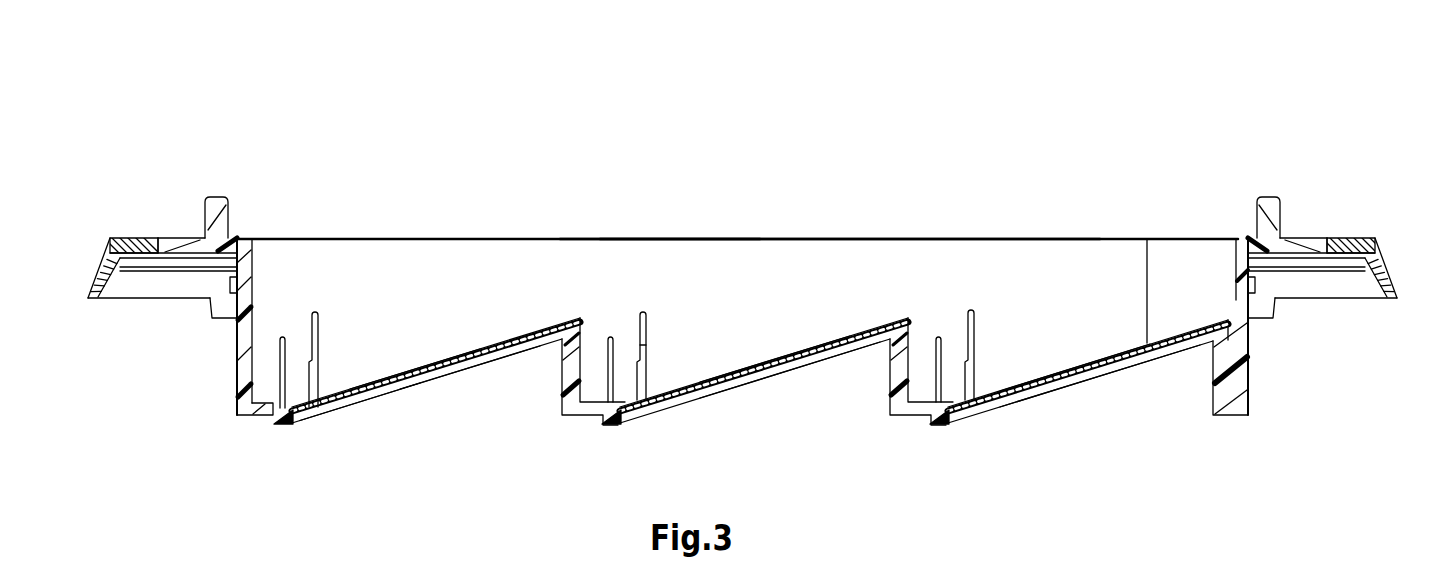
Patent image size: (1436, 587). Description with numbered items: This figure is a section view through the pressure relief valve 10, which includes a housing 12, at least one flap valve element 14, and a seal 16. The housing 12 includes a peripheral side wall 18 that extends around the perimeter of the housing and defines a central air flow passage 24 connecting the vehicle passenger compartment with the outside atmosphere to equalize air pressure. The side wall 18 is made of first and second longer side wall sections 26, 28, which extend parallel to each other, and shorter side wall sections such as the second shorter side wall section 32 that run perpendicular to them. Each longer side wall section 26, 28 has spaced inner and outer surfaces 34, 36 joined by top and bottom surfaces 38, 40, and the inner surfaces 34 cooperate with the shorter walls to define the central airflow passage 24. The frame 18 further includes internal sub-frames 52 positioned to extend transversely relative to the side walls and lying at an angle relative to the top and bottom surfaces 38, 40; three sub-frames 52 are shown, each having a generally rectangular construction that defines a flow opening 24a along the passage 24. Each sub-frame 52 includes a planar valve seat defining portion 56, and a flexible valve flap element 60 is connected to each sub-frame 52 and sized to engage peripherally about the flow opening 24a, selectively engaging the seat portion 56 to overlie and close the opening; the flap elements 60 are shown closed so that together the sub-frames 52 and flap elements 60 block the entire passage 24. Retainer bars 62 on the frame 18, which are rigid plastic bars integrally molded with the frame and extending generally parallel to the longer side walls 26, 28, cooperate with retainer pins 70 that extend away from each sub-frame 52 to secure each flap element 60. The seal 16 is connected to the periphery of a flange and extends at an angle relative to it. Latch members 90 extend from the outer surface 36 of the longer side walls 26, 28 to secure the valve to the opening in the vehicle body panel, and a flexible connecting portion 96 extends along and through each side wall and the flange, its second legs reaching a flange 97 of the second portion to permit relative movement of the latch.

The pressure relief valve 10 is at (551, 95).
The housing 12 is at (217, 200).
The flap valve element 14 is at (407, 355).
The seal 16 is at (110, 245).
The peripheral side wall 18 is at (968, 238).
The central air flow passage 24 is at (727, 285).
The flow opening 24a is at (476, 372).
The first longer side wall section 26 is at (240, 243).
The second longer side wall section 28 is at (1237, 245).
The second shorter side wall section 32 is at (658, 238).
The inner surface 34 is at (266, 421).
The outer surface 36 is at (243, 398).
The top surface 38 is at (247, 240).
The bottom surface 40 is at (245, 418).
The sub-frame 52 is at (386, 397).
The valve seat defining portion 56 is at (580, 322).
The flexible valve flap element 60 is at (462, 352).
The retainer bar 62 is at (338, 240).
The retainer pin 70 is at (650, 345).
The latch member 90 is at (217, 312).
The flexible connecting portion 96 is at (1331, 238).
The flange of the second portion 97 is at (175, 238).